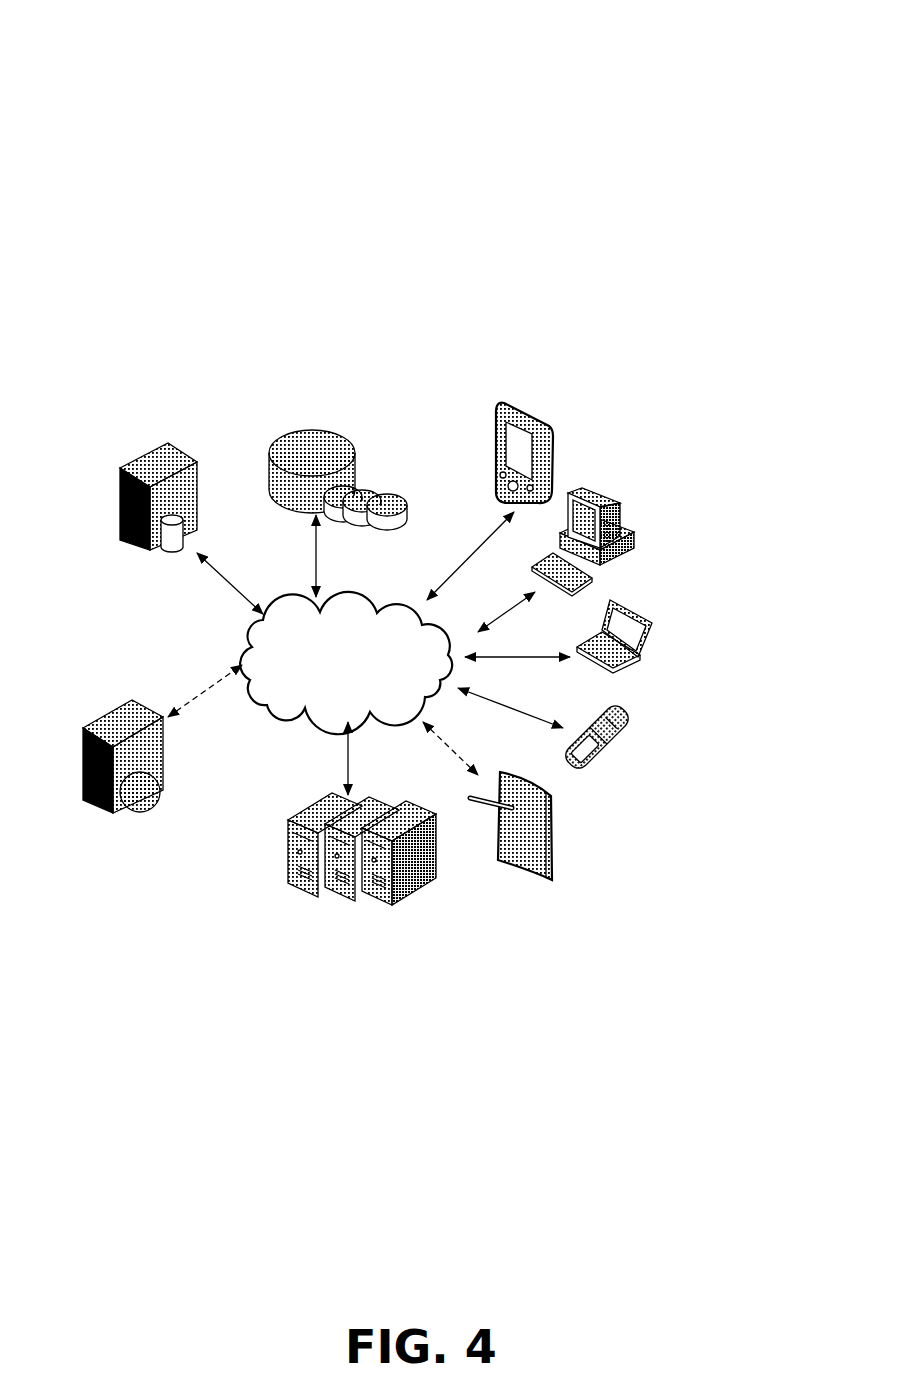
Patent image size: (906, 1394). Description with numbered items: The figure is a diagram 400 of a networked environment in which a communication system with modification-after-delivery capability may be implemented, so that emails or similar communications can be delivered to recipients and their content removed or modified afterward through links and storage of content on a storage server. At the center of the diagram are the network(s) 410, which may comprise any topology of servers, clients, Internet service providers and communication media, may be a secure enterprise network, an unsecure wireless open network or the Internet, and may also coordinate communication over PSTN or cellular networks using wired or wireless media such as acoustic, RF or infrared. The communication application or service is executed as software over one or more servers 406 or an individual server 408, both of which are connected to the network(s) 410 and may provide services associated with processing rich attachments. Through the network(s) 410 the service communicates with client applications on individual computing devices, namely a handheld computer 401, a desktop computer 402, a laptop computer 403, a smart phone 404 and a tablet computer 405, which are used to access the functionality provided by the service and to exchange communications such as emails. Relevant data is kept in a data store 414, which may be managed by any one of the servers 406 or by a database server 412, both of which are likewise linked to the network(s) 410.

The diagram 400 is at (676, 37).
The handheld computer 401 is at (553, 412).
The desktop computer 402 is at (633, 497).
The laptop computer 403 is at (650, 597).
The smart phone 404 is at (625, 710).
The tablet computer 405 is at (560, 815).
The servers 406 is at (313, 800).
The individual server 408 is at (103, 707).
The network(s) 410 is at (350, 590).
The database server 412 is at (168, 556).
The data store 414 is at (325, 410).